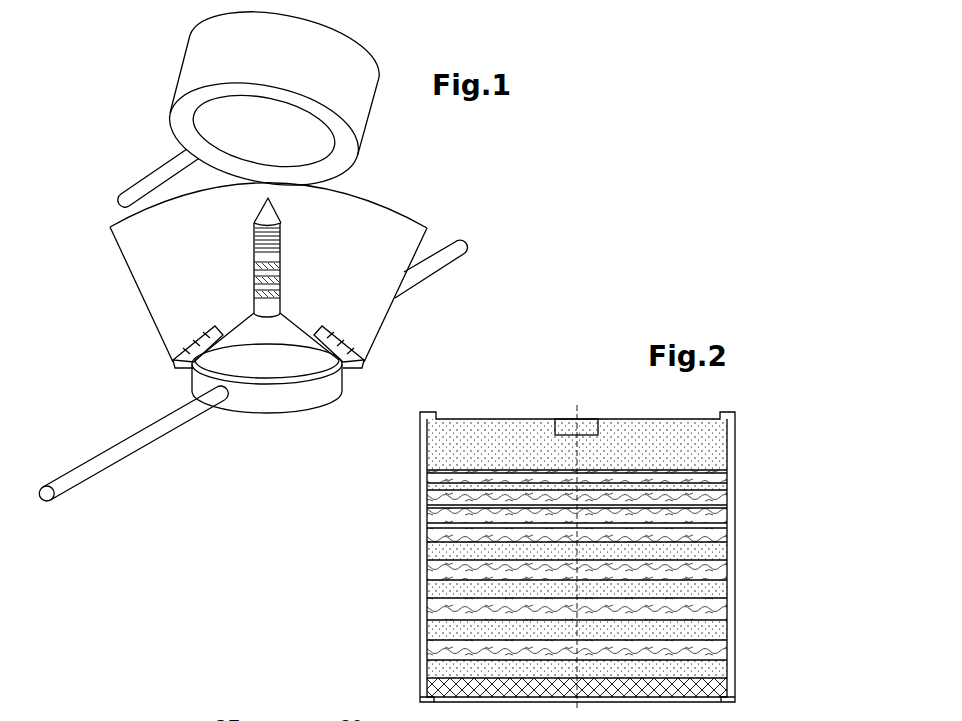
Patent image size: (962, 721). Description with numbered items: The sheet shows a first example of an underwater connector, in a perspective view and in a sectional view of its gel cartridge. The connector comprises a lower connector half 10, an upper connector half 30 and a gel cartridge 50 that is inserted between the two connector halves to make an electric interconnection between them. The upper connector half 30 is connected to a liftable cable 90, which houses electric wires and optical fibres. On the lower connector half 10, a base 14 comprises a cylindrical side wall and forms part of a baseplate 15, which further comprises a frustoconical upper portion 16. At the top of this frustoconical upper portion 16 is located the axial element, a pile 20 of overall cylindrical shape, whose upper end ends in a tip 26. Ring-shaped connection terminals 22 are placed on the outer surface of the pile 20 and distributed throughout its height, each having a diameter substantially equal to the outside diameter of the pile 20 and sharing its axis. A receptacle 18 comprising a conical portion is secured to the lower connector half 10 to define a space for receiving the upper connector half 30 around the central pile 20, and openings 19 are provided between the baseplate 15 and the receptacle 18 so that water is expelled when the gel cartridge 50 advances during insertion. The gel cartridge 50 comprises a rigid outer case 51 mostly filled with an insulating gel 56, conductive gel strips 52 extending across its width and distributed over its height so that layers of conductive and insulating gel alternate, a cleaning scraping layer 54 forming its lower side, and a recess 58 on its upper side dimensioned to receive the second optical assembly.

In FIG. 1, the lower connector half 10 is at (298, 416).
In FIG. 1, the base 14 is at (247, 402).
In FIG. 1, the baseplate 15 is at (186, 369).
In FIG. 1, the frustoconical upper portion 16 is at (303, 361).
In FIG. 1, the receptacle 18 is at (407, 206).
In FIG. 1, the openings 19 is at (352, 347).
In FIG. 1, the pile 20 is at (266, 257).
In FIG. 1, the ring-shaped connection terminals 22 is at (254, 296).
In FIG. 1, the tip 26 is at (270, 212).
In FIG. 1, the upper connector half 30 is at (228, 106).
In FIG. 1, the gel cartridge 50 is at (215, 119).
In FIG. 2, the gel cartridge 50 is at (554, 534).
In FIG. 2, the rigid outer case 51 is at (737, 456).
In FIG. 2, the conductive gel strips 52 is at (722, 568).
In FIG. 2, the cleaning scraping layer 54 is at (716, 690).
In FIG. 2, the insulating gel 56 is at (525, 423).
In FIG. 2, the recess 58 is at (592, 420).
In FIG. 1, the liftable cable 90 is at (128, 196).